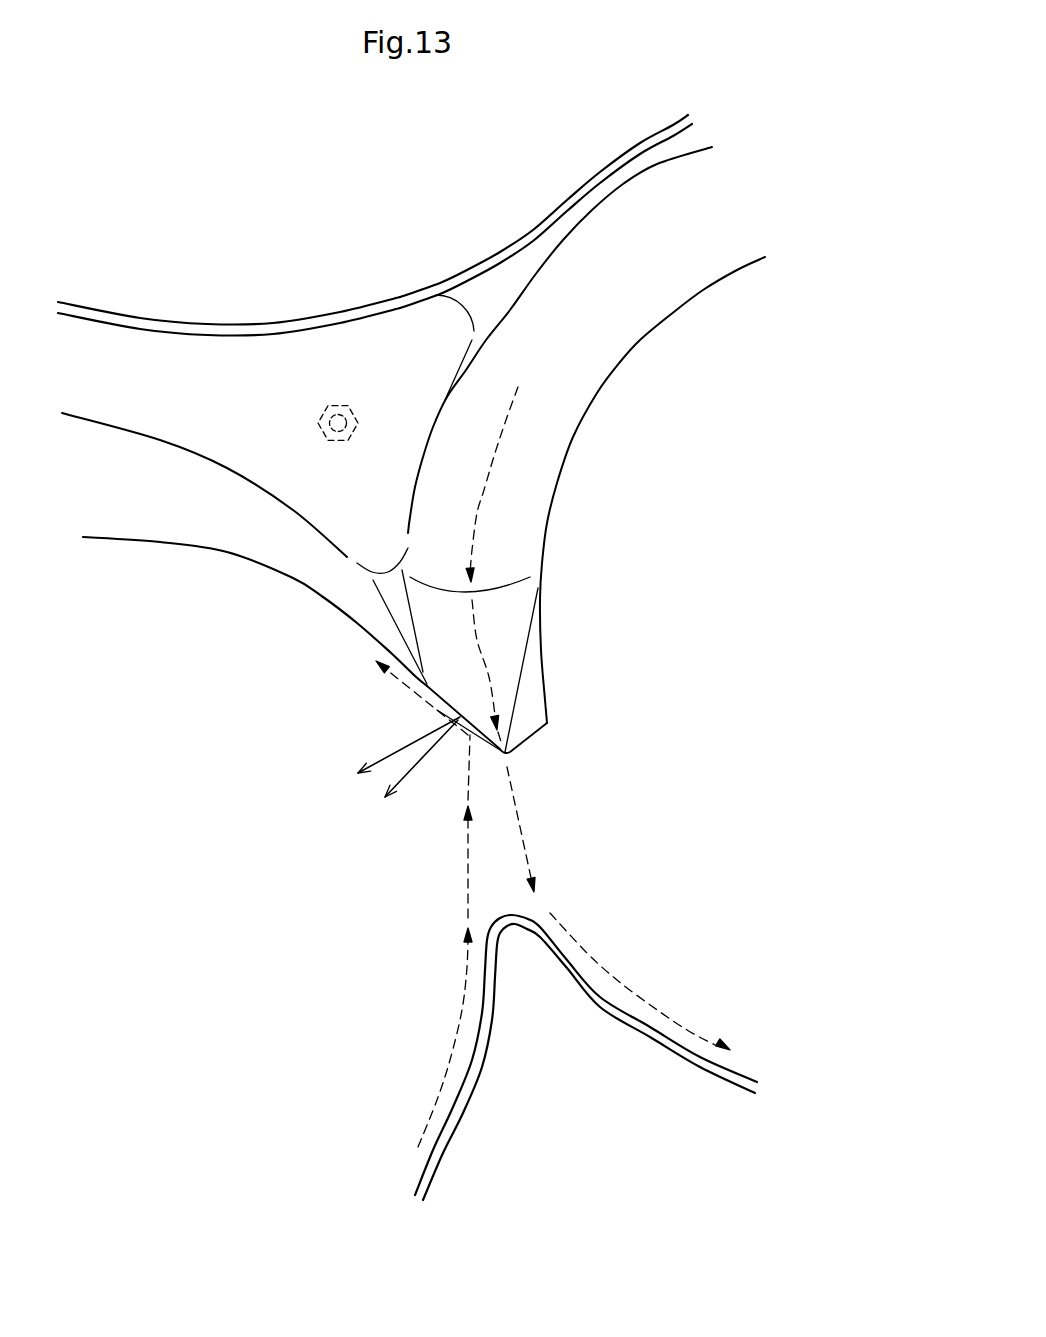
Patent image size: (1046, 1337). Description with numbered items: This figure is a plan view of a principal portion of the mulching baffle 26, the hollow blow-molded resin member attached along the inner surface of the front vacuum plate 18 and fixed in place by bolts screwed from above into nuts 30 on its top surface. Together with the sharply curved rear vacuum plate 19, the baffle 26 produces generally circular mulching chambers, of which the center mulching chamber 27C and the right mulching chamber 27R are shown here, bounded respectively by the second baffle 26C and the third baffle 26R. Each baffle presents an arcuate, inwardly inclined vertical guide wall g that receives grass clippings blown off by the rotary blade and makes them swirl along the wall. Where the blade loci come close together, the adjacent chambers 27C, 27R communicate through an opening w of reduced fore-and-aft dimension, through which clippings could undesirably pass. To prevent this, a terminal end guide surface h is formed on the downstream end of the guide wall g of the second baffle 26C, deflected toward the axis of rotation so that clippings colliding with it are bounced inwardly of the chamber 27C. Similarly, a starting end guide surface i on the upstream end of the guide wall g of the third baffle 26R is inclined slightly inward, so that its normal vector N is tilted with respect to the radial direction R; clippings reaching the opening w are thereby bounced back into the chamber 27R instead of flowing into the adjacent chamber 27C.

The front vacuum plate 18 is at (375, 239).
The third baffle 26R is at (122, 363).
The second baffle 26C is at (615, 183).
The mulching baffle 26 is at (388, 333).
The nut 30 is at (323, 410).
The mulching chamber 27R is at (360, 862).
The mulching chamber 27C is at (742, 693).
The rear vacuum plate 19 is at (597, 997).
The terminal end guide surface h is at (498, 637).
The vertical guide wall g is at (212, 512).
The opening w is at (540, 830).
The starting end guide surface i is at (465, 740).
The radial direction R is at (393, 747).
The normal vector N is at (415, 772).